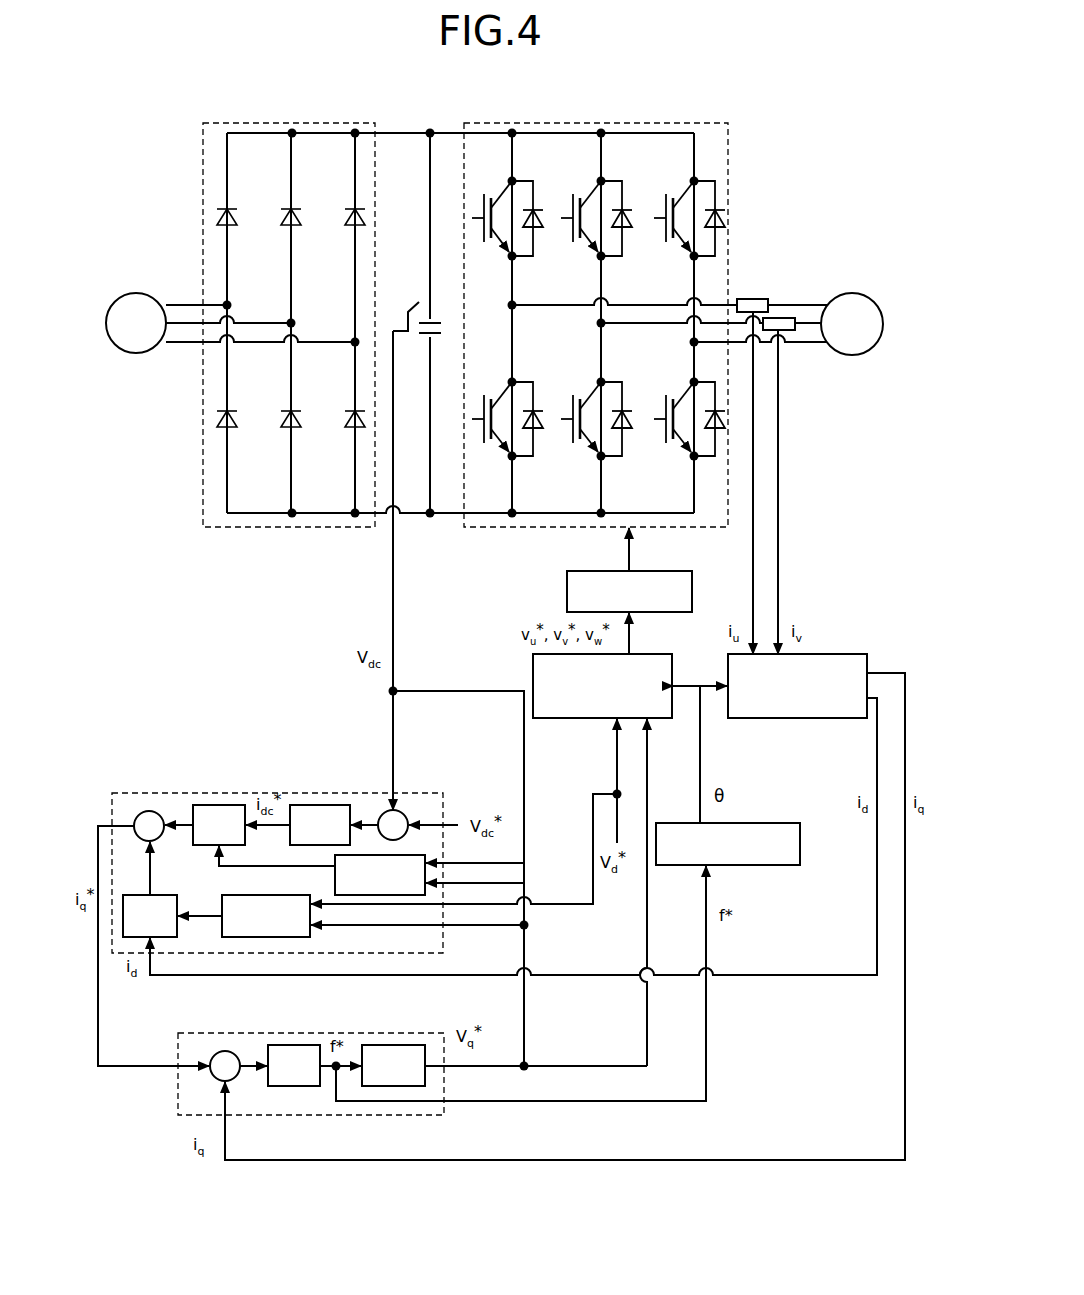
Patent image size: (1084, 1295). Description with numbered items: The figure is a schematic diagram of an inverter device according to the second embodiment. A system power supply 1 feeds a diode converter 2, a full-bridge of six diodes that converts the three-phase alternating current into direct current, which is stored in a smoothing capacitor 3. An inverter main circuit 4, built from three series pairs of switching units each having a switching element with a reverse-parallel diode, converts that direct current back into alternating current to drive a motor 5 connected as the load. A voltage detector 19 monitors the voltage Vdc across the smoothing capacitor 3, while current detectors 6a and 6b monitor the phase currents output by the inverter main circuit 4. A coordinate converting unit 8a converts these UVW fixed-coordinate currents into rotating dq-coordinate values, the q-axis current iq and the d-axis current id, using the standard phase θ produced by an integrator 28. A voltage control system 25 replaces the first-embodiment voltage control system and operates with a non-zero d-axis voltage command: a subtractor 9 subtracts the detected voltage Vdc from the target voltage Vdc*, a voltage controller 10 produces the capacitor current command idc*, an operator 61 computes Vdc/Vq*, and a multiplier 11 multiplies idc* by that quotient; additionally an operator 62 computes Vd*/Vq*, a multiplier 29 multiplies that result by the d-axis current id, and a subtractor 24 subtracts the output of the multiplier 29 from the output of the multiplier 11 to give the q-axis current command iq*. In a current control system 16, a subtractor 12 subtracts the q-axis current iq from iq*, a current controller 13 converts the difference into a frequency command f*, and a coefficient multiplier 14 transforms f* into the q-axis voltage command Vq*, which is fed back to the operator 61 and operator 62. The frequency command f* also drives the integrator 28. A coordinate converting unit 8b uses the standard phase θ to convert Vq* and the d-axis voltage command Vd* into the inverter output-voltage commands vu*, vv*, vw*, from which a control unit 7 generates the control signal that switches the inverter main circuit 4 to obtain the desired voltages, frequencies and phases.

The system power supply 1 is at (140, 353).
The diode converter 2 is at (342, 122).
The smoothing capacitor 3 is at (432, 315).
The inverter main circuit 4 is at (702, 122).
The motor 5 is at (851, 356).
The current detector 6a is at (748, 298).
The current detector 6b is at (779, 316).
The control unit 7 is at (656, 573).
The coordinate converting unit 8a is at (768, 719).
The coordinate converting unit 8b is at (597, 719).
The subtractor 9 is at (382, 810).
The voltage controller 10 is at (318, 805).
The multiplier 11 is at (218, 805).
The subtractor 12 is at (226, 1050).
The current controller 13 is at (300, 1044).
The coefficient multiplier 14 is at (394, 1044).
The current control system 16 is at (346, 1116).
The voltage detector 19 is at (409, 352).
The subtractor 24 is at (149, 805).
The voltage control system 25 is at (426, 793).
The integrator 28 is at (726, 824).
The multiplier 29 is at (162, 896).
The operator 61 is at (335, 884).
The operator 62 is at (234, 896).